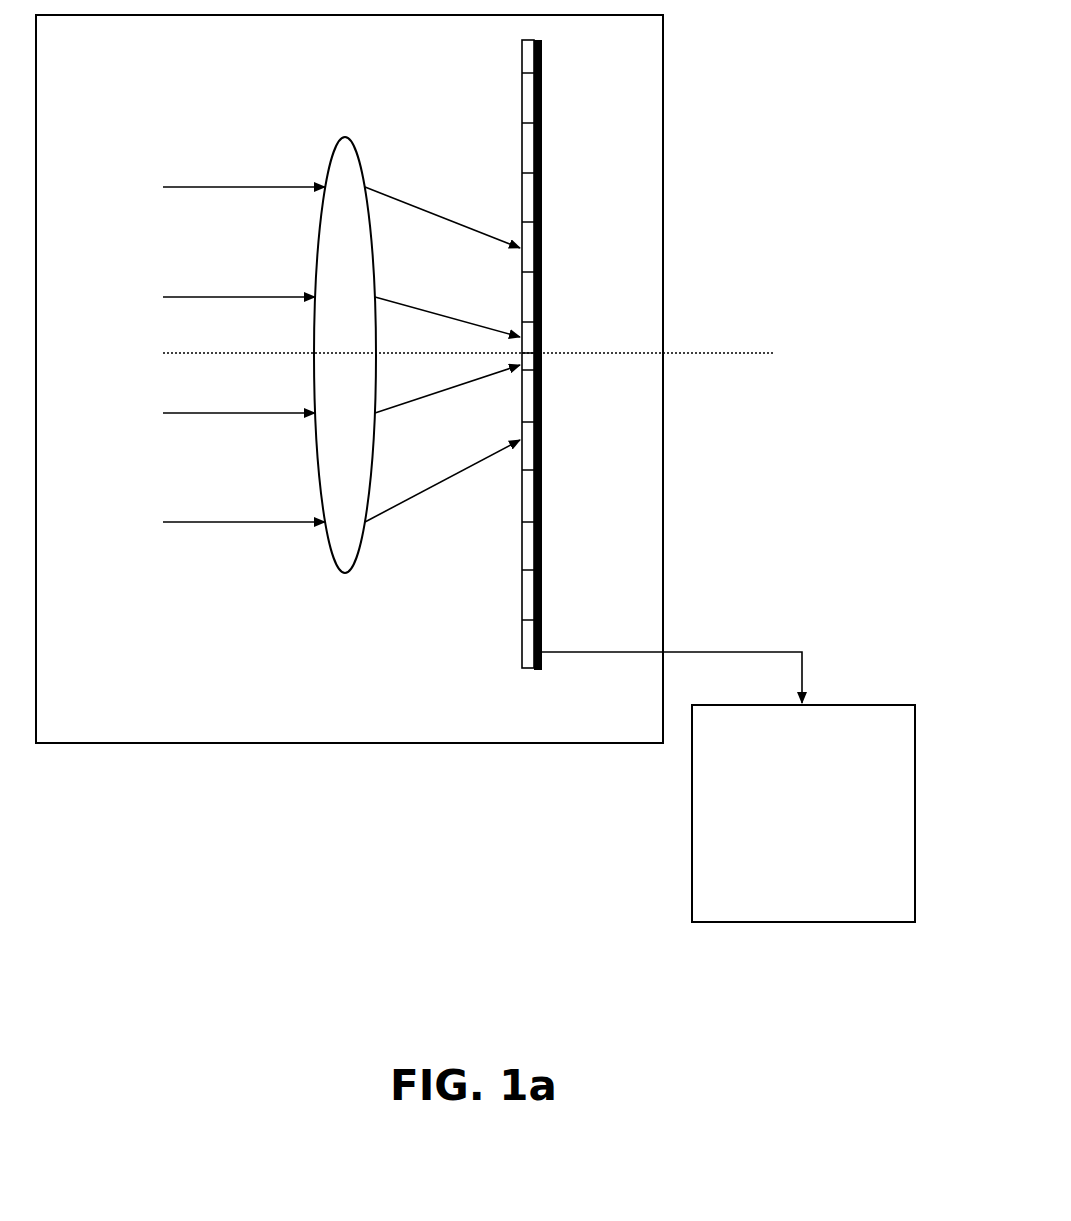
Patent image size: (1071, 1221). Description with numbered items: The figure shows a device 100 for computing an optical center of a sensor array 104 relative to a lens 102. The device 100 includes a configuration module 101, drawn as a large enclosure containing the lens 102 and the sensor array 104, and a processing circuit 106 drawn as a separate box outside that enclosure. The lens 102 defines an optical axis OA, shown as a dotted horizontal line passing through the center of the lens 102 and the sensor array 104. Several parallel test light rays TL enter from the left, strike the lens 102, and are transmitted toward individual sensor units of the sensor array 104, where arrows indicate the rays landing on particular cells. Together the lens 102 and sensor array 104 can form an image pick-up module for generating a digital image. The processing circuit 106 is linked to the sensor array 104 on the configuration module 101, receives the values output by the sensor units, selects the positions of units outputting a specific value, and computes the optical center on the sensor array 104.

The device for optical center detection 100 is at (336, 840).
The configuration module 101 is at (664, 57).
The lens 102 is at (343, 573).
The sensor array 104 is at (527, 670).
The processing circuit 106 is at (817, 922).